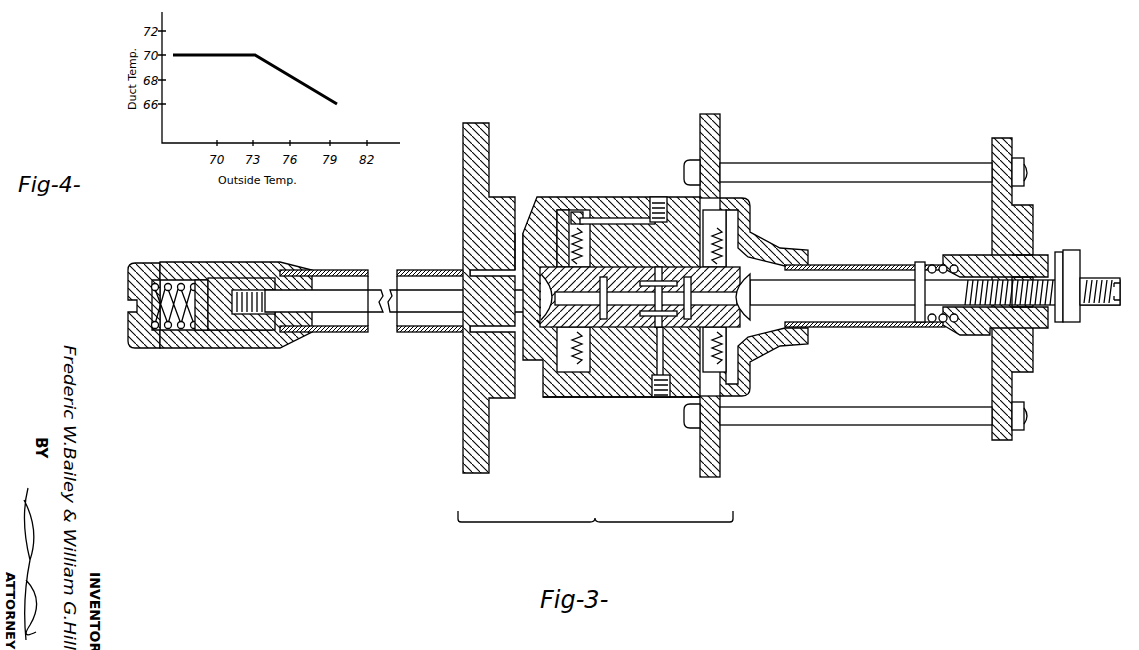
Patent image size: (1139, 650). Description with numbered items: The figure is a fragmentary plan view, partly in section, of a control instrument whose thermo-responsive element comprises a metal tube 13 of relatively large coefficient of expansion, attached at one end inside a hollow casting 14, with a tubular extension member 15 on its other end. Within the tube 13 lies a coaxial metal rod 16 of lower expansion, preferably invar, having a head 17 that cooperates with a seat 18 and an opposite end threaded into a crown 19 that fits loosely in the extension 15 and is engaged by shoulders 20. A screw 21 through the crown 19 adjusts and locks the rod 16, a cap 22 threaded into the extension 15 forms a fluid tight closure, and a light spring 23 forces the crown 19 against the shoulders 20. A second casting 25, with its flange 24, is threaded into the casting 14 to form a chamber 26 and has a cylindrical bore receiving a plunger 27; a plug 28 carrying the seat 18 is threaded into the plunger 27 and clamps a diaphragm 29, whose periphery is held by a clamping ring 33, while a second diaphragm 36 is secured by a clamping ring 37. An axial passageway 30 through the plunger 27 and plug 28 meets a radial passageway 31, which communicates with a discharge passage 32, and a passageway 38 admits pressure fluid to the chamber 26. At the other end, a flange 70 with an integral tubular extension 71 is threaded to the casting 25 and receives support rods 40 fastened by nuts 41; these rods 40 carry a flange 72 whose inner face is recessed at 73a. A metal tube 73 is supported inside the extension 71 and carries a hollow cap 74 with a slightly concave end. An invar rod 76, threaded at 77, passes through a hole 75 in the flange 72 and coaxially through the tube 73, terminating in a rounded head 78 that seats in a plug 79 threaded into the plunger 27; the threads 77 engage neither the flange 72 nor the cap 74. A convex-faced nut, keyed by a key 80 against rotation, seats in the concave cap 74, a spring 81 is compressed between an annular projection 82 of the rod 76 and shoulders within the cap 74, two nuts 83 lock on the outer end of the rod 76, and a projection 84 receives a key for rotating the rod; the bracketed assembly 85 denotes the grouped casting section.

The metal tube 13 is at (357, 333).
The hollow casting 14 is at (556, 398).
The tubular extension member 15 is at (225, 264).
The metal rod 16 is at (380, 313).
The head 17 is at (538, 320).
The seat 18 is at (558, 340).
The crown 19 is at (237, 342).
The shoulders 20 is at (270, 289).
The screw 21 is at (201, 281).
The cap 22 is at (129, 330).
The light spring 23 is at (153, 348).
The flange 24 is at (466, 170).
The second casting 25 is at (636, 197).
The chamber 26 is at (519, 262).
The plunger 27 is at (600, 345).
The plug 28 is at (562, 248).
The diaphragm 29 is at (568, 236).
The axial passageway 30 is at (618, 340).
The radial passageway 31 is at (640, 340).
The discharge passage 32 is at (660, 398).
The clamping ring 33 is at (575, 213).
The diaphragm 36 is at (719, 241).
The clamping ring 37 is at (735, 368).
The passageway 38 is at (660, 200).
The support rods 40 is at (850, 173).
The nuts 41 is at (690, 162).
The flange 70 is at (721, 461).
The tubular extension 71 is at (796, 256).
The flange 72 is at (1033, 352).
The metal tube 73 is at (866, 330).
The recessed portion 73a is at (990, 253).
The hollow cap 74 is at (960, 336).
The hole 75 is at (1058, 252).
The invar rod 76 is at (877, 292).
The threads 77 is at (1092, 280).
The rounded head 78 is at (744, 286).
The plug 79 is at (985, 261).
The key 80 is at (986, 336).
The spring 81 is at (932, 324).
The annular projection 82 is at (920, 262).
The nuts 83 is at (1076, 251).
The projection 84 is at (1116, 306).
The valve assembly 85 is at (595, 531).